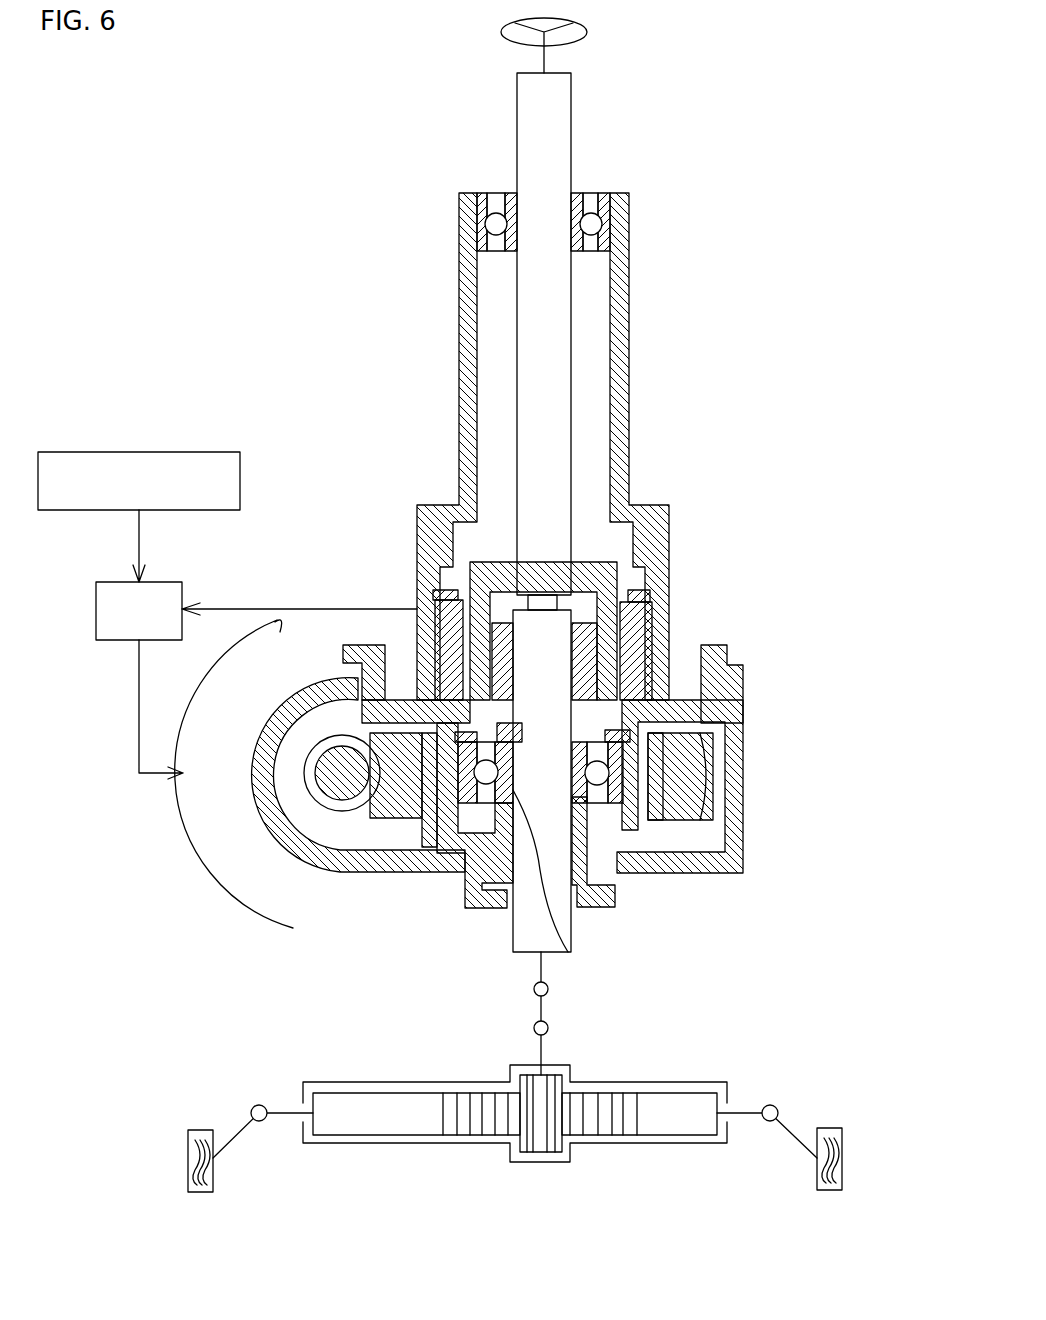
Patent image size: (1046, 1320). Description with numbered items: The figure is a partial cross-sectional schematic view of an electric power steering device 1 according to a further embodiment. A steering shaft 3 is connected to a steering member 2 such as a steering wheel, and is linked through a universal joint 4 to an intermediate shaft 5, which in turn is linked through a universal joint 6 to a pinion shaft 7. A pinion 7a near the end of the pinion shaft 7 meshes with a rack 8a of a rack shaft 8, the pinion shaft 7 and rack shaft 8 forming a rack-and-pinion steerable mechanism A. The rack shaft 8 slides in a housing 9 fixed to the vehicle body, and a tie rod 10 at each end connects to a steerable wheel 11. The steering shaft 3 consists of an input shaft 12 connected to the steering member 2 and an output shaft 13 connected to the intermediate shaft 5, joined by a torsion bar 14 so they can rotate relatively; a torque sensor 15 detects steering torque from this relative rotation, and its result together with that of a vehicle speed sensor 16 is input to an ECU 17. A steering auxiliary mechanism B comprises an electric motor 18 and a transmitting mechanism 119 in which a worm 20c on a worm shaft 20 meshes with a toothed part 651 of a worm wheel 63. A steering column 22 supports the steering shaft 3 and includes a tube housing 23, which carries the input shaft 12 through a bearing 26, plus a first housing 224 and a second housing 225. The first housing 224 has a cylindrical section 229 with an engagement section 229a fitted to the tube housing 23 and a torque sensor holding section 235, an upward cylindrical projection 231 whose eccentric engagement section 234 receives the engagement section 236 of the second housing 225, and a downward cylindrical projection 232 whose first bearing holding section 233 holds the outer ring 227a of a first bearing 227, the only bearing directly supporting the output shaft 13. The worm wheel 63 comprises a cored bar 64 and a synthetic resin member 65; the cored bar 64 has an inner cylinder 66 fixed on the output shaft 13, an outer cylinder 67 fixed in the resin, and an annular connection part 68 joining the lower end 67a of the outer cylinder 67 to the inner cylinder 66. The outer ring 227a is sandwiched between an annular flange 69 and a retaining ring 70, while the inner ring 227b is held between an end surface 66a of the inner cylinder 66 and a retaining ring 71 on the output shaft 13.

The electric power steering device 1 is at (641, 75).
The steering member 2 is at (503, 33).
The steering shaft 3 is at (586, 130).
The universal joint 4 is at (550, 990).
The intermediate shaft 5 is at (537, 1008).
The universal joint 6 is at (550, 1030).
The pinion shaft 7 is at (512, 1130).
The pinion 7a is at (548, 1160).
The rack shaft 8 is at (515, 1151).
The rack 8a is at (490, 1130).
The housing 9 is at (415, 1082).
The tie rod 10 is at (243, 1135).
The steerable wheel 11 is at (200, 1128).
The input shaft 12 is at (558, 303).
The output shaft 13 is at (524, 957).
The torsion bar 14 is at (548, 598).
The torque sensor 15 is at (645, 622).
The vehicle speed sensor 16 is at (172, 452).
The ECU 17 is at (168, 582).
The electric motor 18 is at (200, 868).
The worm shaft 20 is at (333, 792).
The worm 20c is at (293, 800).
The steering column 22 is at (569, 446).
The tube housing 23 is at (632, 348).
The bearing 26 is at (496, 213).
The worm wheel 63 is at (680, 846).
The cored bar 64 is at (645, 835).
The synthetic resin member 65 is at (687, 838).
The inner cylinder 66 is at (498, 855).
The end surface 66a is at (578, 798).
The outer cylinder 67 is at (427, 790).
The end of the outer cylinder 67a is at (467, 796).
The annular connection part 68 is at (447, 843).
The annular flange 69 is at (613, 815).
The retaining ring 70 is at (632, 712).
The retaining ring 71 is at (558, 735).
The transmitting mechanism 119 is at (368, 842).
The first housing 224 is at (684, 594).
The second housing 225 is at (760, 708).
The first bearing 227 is at (605, 770).
The outer ring 227a is at (470, 925).
The inner ring 227b is at (560, 945).
The cylindrical section 229 is at (672, 536).
The engagement section 229a is at (450, 540).
The cylindrical projection 231 is at (722, 682).
The cylindrical projection 232 is at (705, 800).
The first bearing holding section 233 is at (630, 778).
The eccentric engagement section 234 is at (370, 700).
The torque sensor holding section 235 is at (440, 627).
The engagement section 236 is at (360, 664).
The toothed part 651 is at (660, 795).
The steerable mechanism A is at (584, 1174).
The steering auxiliary mechanism B is at (176, 852).